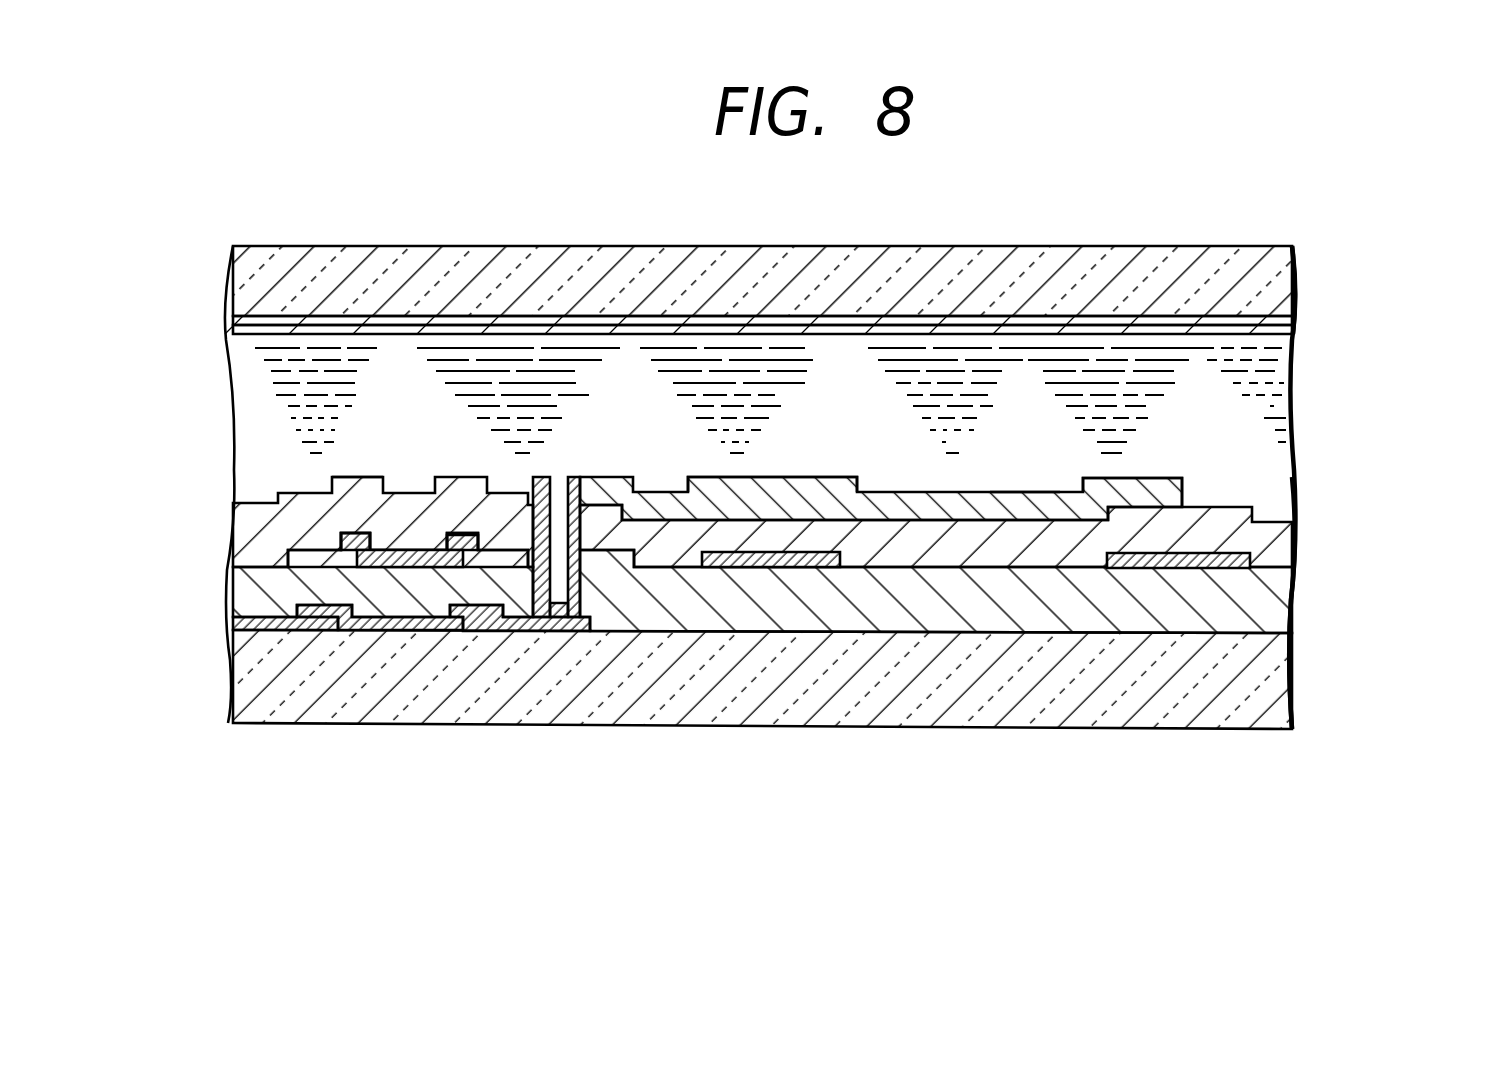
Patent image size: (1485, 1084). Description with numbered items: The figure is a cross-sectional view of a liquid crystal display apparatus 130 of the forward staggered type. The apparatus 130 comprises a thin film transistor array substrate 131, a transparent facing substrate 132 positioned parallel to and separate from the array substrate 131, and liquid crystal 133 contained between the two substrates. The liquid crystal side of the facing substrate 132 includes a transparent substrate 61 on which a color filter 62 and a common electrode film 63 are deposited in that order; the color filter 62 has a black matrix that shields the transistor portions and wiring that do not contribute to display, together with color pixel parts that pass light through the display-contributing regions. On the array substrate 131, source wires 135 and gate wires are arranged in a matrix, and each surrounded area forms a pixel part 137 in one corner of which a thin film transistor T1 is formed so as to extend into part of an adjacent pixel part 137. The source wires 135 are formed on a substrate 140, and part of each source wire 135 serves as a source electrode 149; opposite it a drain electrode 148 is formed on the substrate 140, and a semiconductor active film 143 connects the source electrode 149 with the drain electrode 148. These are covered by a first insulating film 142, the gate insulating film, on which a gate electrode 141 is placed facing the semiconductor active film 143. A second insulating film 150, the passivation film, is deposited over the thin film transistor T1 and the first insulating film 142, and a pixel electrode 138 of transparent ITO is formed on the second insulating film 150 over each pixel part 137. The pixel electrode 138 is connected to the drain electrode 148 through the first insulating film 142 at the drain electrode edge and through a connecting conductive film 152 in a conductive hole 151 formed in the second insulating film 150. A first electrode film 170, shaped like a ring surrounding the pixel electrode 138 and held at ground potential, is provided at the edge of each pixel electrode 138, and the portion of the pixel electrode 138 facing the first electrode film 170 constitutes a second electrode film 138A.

The transparent substrate 61 is at (765, 248).
The color filter 62 is at (958, 323).
The common electrode film 63 is at (1200, 332).
The liquid crystal display apparatus 130 is at (1380, 757).
The thin film transistor array substrate 131 is at (1308, 742).
The facing substrate 132 is at (1308, 242).
The liquid crystal 133 is at (1289, 392).
The source wire 135 is at (270, 624).
The pixel part 137 is at (1028, 456).
The pixel electrode 138 is at (945, 512).
The second electrode film 138A is at (793, 498).
The substrate 140 is at (700, 707).
The gate electrode 141 is at (376, 568).
The first insulating film 142 is at (997, 603).
The semiconductor active film 143 is at (425, 610).
The drain electrode 148 is at (513, 552).
The source electrode 149 is at (308, 624).
The second insulating film 150 is at (235, 545).
The conductive hole 151 is at (558, 566).
The connecting conductive film 152 is at (647, 514).
The first electrode film 170 is at (757, 556).
The thin film transistor T1 is at (407, 448).